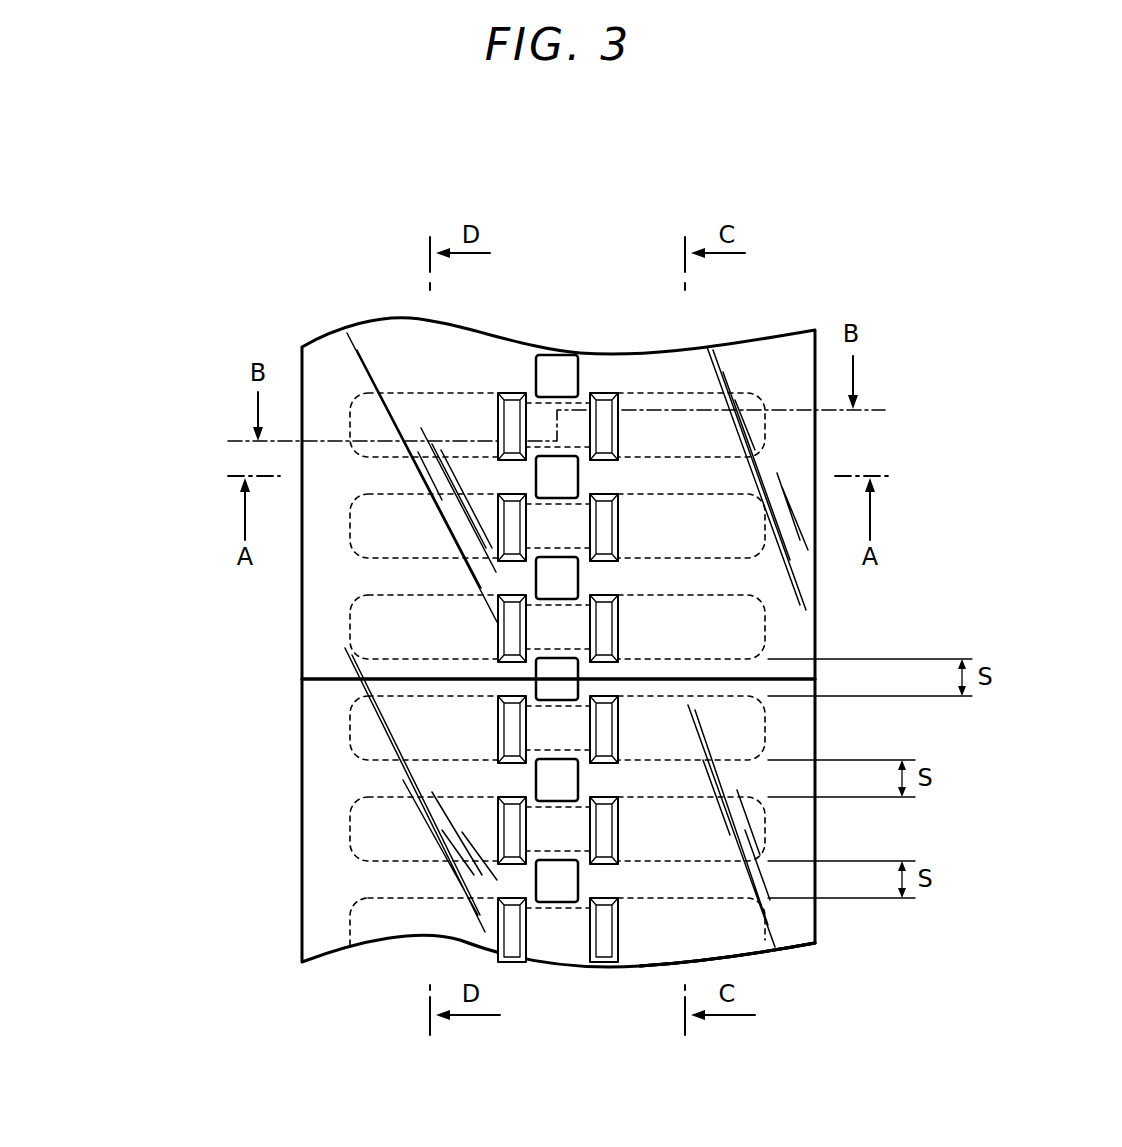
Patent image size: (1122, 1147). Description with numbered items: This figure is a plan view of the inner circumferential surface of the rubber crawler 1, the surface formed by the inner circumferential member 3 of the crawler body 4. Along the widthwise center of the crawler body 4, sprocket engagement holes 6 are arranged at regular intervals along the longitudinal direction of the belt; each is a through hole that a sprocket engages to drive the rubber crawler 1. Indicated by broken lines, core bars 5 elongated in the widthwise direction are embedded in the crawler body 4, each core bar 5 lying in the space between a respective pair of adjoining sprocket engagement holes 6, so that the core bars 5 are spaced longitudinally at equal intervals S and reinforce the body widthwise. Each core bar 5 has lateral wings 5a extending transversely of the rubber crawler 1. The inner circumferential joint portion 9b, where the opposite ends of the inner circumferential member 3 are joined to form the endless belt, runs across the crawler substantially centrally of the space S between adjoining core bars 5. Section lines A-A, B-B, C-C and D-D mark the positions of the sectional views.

The rubber crawler 1 is at (797, 301).
The inner circumferential member 3 is at (764, 1003).
The crawler body 4 is at (806, 973).
The core bar 5 is at (482, 669).
The lateral wing 5a is at (563, 737).
The sprocket engagement hole 6 is at (578, 377).
The inner circumferential joint portion 9b is at (530, 683).